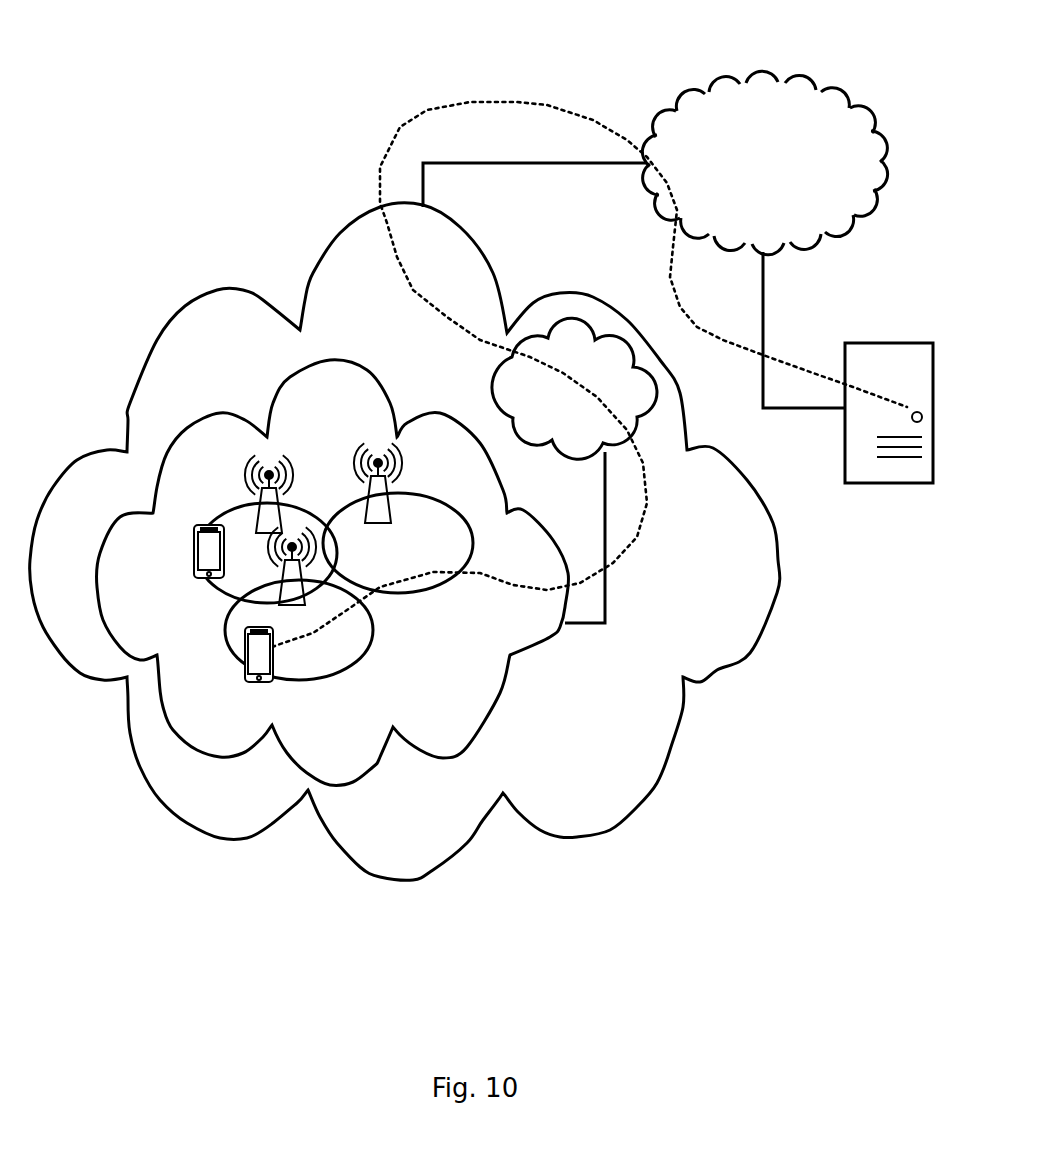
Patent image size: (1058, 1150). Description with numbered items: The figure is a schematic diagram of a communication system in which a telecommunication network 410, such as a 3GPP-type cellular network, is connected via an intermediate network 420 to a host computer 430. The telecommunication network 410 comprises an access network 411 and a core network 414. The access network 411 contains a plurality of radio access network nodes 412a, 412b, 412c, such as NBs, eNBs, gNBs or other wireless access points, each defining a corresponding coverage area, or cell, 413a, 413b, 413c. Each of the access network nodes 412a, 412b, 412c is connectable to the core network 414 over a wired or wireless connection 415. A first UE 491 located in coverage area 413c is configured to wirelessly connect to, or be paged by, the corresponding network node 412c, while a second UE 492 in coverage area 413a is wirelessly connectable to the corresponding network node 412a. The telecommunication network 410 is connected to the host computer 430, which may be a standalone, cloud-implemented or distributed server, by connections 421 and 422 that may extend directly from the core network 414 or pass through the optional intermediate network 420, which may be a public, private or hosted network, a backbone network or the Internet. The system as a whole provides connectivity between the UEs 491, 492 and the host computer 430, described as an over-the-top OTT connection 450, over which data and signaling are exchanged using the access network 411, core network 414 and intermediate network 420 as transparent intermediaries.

The telecommunication network 410 is at (346, 316).
The access network 411 is at (303, 423).
The access network node 412a is at (305, 602).
The access network node 412b is at (402, 476).
The access network node 412c is at (250, 488).
The coverage area 413a is at (372, 642).
The coverage area 413b is at (437, 587).
The coverage area 413c is at (233, 507).
The core network 414 is at (556, 375).
The connection 415 is at (612, 587).
The intermediate network 420 is at (745, 178).
The connection 421 is at (550, 163).
The connection 422 is at (798, 408).
The host computer 430 is at (907, 483).
The OTT connection 450 is at (410, 127).
The first UE 491 is at (203, 580).
The second UE 492 is at (250, 678).